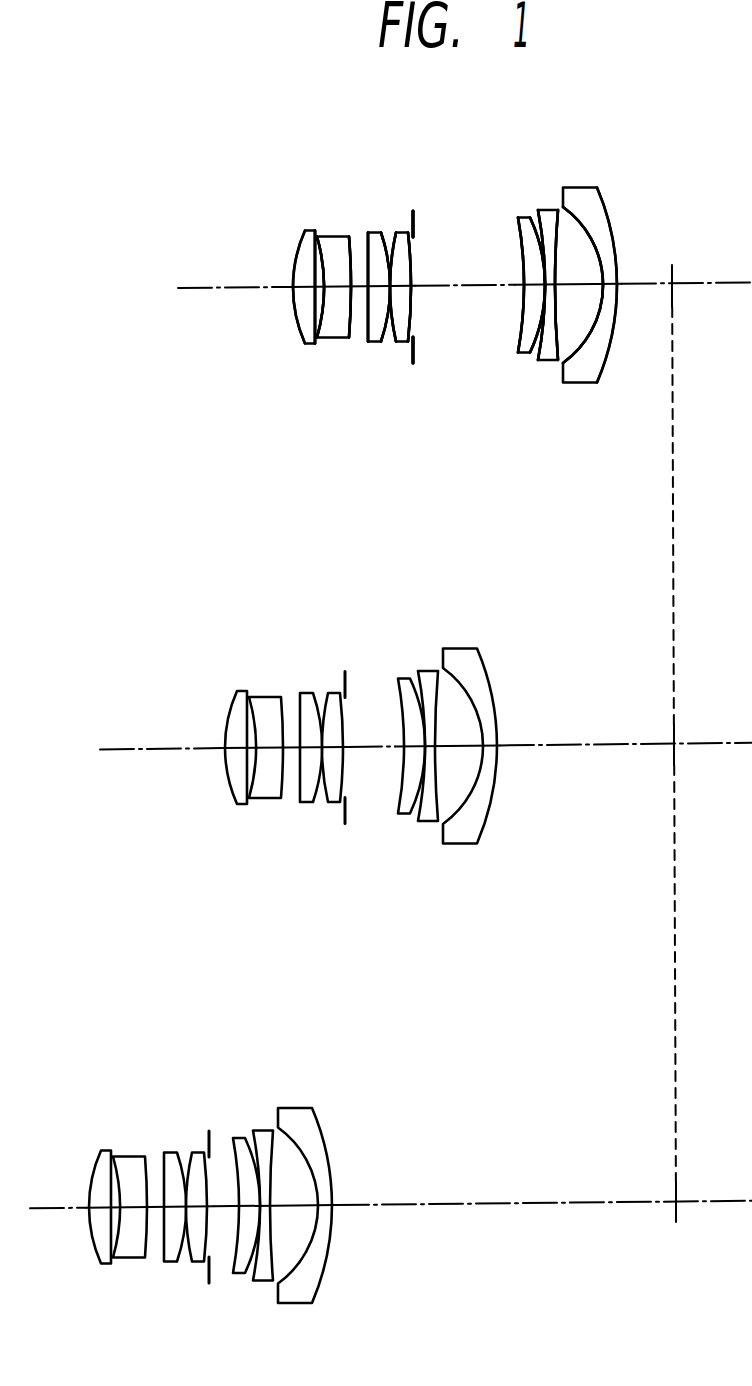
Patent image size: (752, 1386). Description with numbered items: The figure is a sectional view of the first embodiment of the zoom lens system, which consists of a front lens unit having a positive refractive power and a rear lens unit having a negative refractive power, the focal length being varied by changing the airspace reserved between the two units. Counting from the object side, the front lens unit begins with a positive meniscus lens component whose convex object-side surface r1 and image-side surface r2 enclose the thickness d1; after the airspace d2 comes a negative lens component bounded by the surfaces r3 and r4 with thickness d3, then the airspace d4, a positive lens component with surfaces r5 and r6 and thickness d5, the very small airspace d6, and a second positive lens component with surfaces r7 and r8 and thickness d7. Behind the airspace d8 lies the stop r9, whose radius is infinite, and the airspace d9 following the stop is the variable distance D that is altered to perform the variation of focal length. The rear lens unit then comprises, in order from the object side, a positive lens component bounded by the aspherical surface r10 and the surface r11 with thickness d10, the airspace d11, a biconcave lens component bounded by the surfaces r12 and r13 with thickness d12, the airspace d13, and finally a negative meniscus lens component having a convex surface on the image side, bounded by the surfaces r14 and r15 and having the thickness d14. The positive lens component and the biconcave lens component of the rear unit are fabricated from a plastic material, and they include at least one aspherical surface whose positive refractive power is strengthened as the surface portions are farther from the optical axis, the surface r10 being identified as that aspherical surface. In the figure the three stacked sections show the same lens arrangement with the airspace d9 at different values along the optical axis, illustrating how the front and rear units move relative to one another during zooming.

The first lens surface radius of curvature r1 is at (297, 250).
The second lens surface radius of curvature r2 is at (303, 240).
The third lens surface radius of curvature r3 is at (320, 236).
The fourth lens surface radius of curvature r4 is at (338, 236).
The fifth lens surface radius of curvature r5 is at (367, 234).
The sixth lens surface radius of curvature r6 is at (378, 233).
The seventh lens surface radius of curvature r7 is at (395, 234).
The eighth lens surface radius of curvature r8 is at (406, 233).
The stop r9 is at (414, 218).
The tenth lens surface radius of curvature (aspherical surface) r10 is at (517, 232).
The eleventh lens surface radius of curvature r11 is at (529, 217).
The twelfth lens surface radius of curvature r12 is at (540, 209).
The thirteenth lens surface radius of curvature r13 is at (554, 208).
The fourteenth lens surface radius of curvature r14 is at (566, 204).
The fifteenth lens surface radius of curvature r15 is at (604, 204).
The first lens thickness d1 is at (296, 300).
The first airspace d2 is at (307, 310).
The second lens thickness d3 is at (322, 334).
The second airspace d4 is at (355, 336).
The third lens thickness d5 is at (373, 340).
The third airspace d6 is at (387, 340).
The fourth lens thickness d7 is at (400, 340).
The fourth airspace d8 is at (412, 320).
The variable airspace d9 is at (432, 293).
The fifth lens thickness d10 is at (523, 292).
The fifth airspace d11 is at (541, 298).
The sixth lens thickness d12 is at (546, 360).
The sixth airspace d13 is at (571, 293).
The seventh lens thickness d14 is at (611, 312).